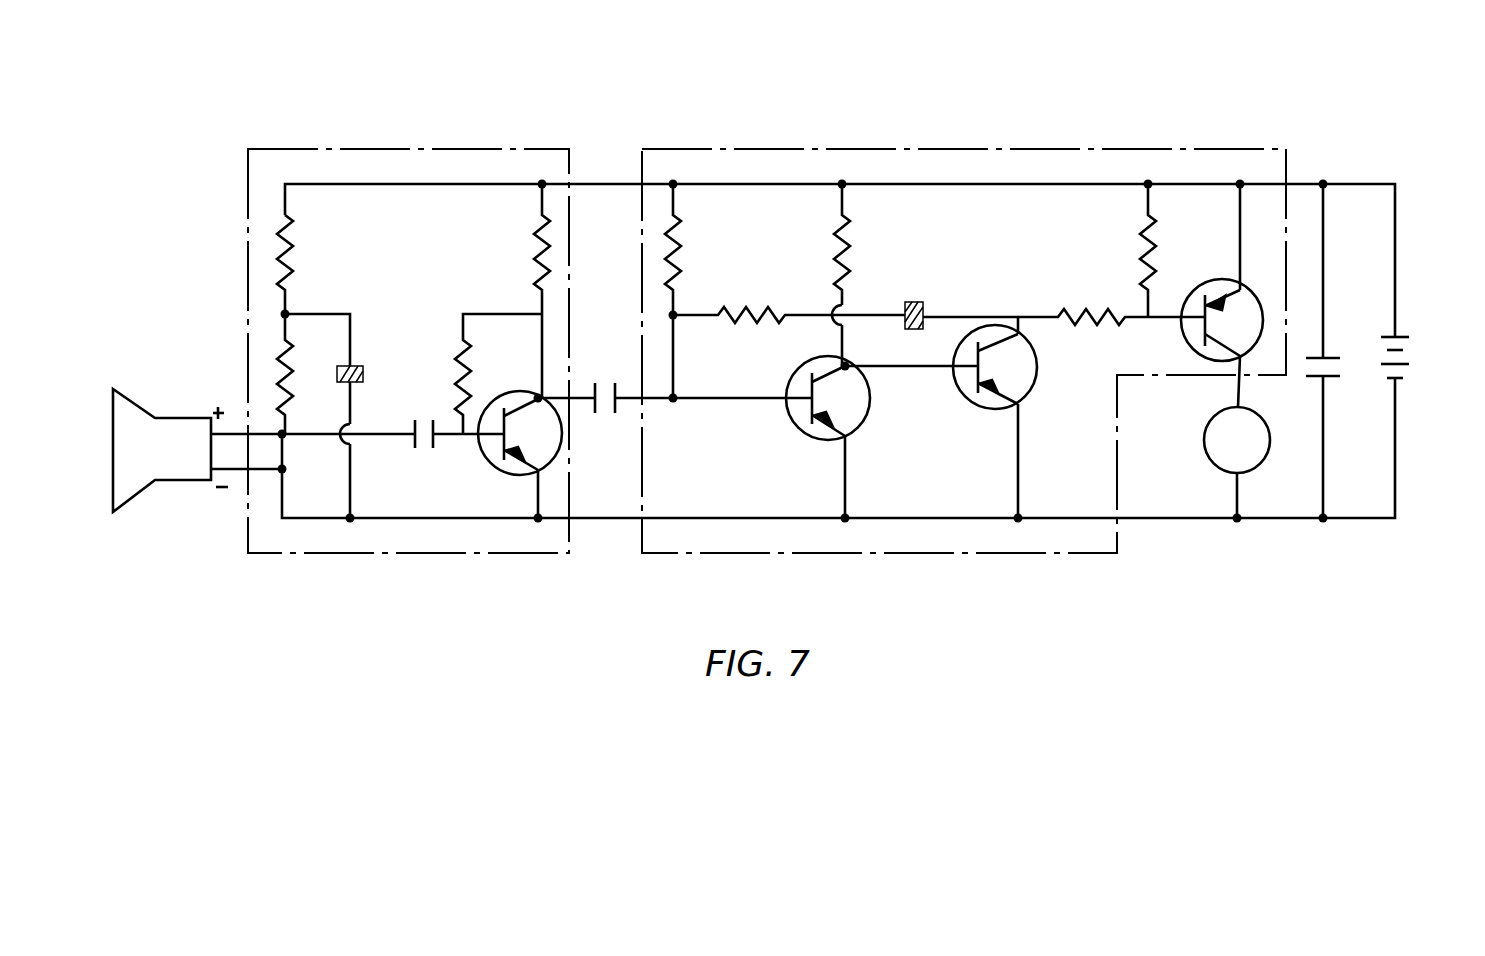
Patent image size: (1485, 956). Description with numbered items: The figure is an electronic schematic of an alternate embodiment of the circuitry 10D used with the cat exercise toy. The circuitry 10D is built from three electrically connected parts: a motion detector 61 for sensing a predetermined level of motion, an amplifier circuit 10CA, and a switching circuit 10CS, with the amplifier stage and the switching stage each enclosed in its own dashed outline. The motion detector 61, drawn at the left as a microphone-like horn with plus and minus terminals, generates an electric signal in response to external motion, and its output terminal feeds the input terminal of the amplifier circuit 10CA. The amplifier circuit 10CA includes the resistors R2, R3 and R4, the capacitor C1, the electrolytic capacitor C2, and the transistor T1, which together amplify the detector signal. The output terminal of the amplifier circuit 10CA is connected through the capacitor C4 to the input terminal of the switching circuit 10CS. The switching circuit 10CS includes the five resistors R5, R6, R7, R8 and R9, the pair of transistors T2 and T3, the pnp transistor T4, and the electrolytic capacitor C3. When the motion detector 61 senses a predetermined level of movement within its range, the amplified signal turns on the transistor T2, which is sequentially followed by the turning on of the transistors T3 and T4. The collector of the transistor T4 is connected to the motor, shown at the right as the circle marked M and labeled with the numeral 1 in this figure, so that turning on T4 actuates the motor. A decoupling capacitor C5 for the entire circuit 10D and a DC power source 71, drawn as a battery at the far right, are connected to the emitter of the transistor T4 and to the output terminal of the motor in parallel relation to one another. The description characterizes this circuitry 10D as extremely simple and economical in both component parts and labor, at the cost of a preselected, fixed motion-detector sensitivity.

The circuitry 10D is at (778, 58).
The amplifier circuit 10CA is at (472, 147).
The switching circuit 10CS is at (1048, 147).
The motion detector 61 is at (162, 482).
The DC power source 71 is at (1405, 334).
The motor 1 is at (1213, 467).
The resistor R2 is at (282, 247).
The resistor R3 is at (282, 368).
The resistor R4 is at (540, 235).
The resistor R5 is at (675, 240).
The resistor R6 is at (758, 305).
The resistor R7 is at (848, 295).
The resistor R8 is at (1093, 308).
The resistor R9 is at (1150, 245).
The capacitor C1 is at (412, 447).
The electrolytic capacitor C2 is at (338, 385).
The electrolytic capacitor C3 is at (923, 305).
The capacitor C4 is at (615, 412).
The decoupling capacitor C5 is at (1325, 383).
The npn transistor T1 is at (502, 470).
The npn transistor T2 is at (813, 440).
The npn transistor T3 is at (985, 410).
The pnp transistor T4 is at (1243, 283).